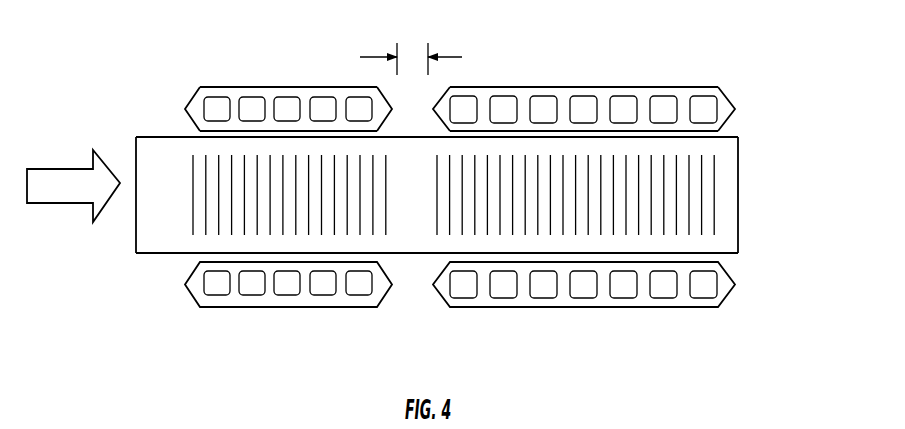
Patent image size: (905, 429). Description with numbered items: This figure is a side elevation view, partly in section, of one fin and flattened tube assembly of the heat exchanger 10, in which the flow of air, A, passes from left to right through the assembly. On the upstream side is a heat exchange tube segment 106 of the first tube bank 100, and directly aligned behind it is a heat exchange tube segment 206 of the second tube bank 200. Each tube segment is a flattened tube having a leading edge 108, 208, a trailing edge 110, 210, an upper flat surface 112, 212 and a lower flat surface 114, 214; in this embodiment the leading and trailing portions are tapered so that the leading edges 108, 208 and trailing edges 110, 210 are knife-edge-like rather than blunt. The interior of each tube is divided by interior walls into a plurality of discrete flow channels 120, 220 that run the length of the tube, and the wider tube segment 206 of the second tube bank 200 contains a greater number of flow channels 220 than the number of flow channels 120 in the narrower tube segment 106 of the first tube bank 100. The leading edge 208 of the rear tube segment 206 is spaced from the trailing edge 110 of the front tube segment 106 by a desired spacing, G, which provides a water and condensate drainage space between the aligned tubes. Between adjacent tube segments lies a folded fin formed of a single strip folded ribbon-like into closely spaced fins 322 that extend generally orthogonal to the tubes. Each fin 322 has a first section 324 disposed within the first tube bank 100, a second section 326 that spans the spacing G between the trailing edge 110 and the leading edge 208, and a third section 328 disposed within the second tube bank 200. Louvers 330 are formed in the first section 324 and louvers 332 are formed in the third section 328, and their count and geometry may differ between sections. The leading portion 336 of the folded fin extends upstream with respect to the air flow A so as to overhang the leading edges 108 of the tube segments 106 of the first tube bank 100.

The heat exchanger 10 is at (444, 223).
The first tube bank 100 is at (281, 196).
The second tube bank 200 is at (603, 198).
The heat exchange tube segment 106 is at (287, 69).
The leading edge 108 is at (188, 104).
The trailing edge 110 is at (392, 98).
The upper flat surface 112 is at (253, 86).
The lower flat surface 114 is at (233, 307).
The discrete flow channels 120 is at (288, 108).
The heat exchange tube segment 206 is at (603, 99).
The leading edge 208 is at (436, 112).
The trailing edge 210 is at (736, 104).
The upper flat surface 212 is at (483, 86).
The lower flat surface 214 is at (629, 307).
The discrete flow channels 220 is at (508, 100).
The fins 322 is at (182, 142).
The first section 324 is at (198, 243).
The second section 326 is at (415, 240).
The third section 328 is at (712, 148).
The louvers 330 is at (385, 183).
The louvers 332 is at (710, 190).
The leading portion 336 is at (147, 153).
The air flow A is at (93, 224).
The spacing G is at (419, 58).